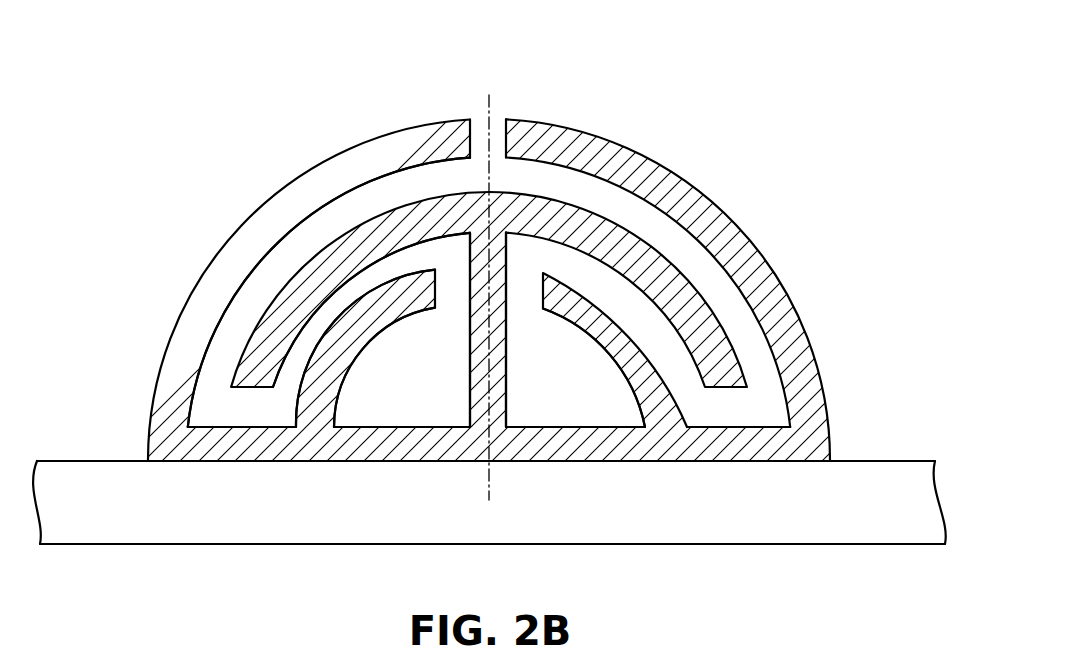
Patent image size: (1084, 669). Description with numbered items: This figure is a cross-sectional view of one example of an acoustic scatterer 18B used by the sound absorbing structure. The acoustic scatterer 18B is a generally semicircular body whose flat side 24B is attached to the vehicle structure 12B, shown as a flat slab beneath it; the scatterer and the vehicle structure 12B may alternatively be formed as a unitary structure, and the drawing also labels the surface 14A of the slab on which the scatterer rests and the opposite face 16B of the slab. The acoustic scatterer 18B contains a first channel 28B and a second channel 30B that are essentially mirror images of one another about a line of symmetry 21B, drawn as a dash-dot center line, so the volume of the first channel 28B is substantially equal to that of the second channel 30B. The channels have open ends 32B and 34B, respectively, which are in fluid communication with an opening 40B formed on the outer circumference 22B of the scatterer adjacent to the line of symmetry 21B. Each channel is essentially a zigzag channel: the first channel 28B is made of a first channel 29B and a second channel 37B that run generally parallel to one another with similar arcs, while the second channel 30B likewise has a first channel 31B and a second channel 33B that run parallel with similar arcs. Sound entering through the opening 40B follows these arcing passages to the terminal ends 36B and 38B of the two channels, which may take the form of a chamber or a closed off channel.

The vehicle structure 12B is at (54, 497).
The top surface of substrate 14A is at (83, 461).
The bottom surface of substrate 16B is at (110, 546).
The acoustic scatterer 18B is at (542, 334).
The line of symmetry 21B is at (486, 470).
The outer circumference 22B is at (489, 252).
The flat side 24B is at (703, 462).
The first channel 28B is at (243, 313).
The first channel 29B is at (269, 270).
The second channel 30B is at (483, 274).
The first channel 31B is at (697, 264).
The open end 32B is at (443, 180).
The second channel 33B is at (683, 363).
The open end 34B is at (537, 178).
The terminal end 36B is at (375, 405).
The second channel 37B is at (297, 357).
The terminal end 38B is at (562, 408).
The opening 40B is at (482, 132).